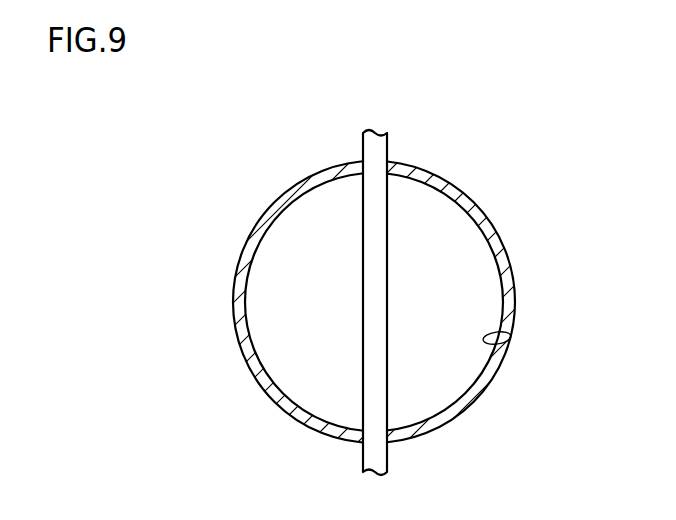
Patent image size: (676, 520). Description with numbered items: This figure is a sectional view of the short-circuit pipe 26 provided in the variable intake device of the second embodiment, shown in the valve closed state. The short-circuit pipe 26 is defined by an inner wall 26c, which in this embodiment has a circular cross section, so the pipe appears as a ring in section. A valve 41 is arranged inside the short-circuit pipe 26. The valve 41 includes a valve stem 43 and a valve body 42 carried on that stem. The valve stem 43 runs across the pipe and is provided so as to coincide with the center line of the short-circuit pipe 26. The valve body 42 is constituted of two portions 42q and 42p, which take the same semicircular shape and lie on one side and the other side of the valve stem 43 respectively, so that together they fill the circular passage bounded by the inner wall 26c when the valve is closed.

The short-circuit pipe 26 is at (511, 300).
The inner wall 26c is at (510, 342).
The valve 41 is at (453, 191).
The valve body 42 is at (428, 66).
The portion of valve body 42q is at (329, 213).
The portion of valve body 42p is at (420, 213).
The valve stem 43 is at (370, 388).